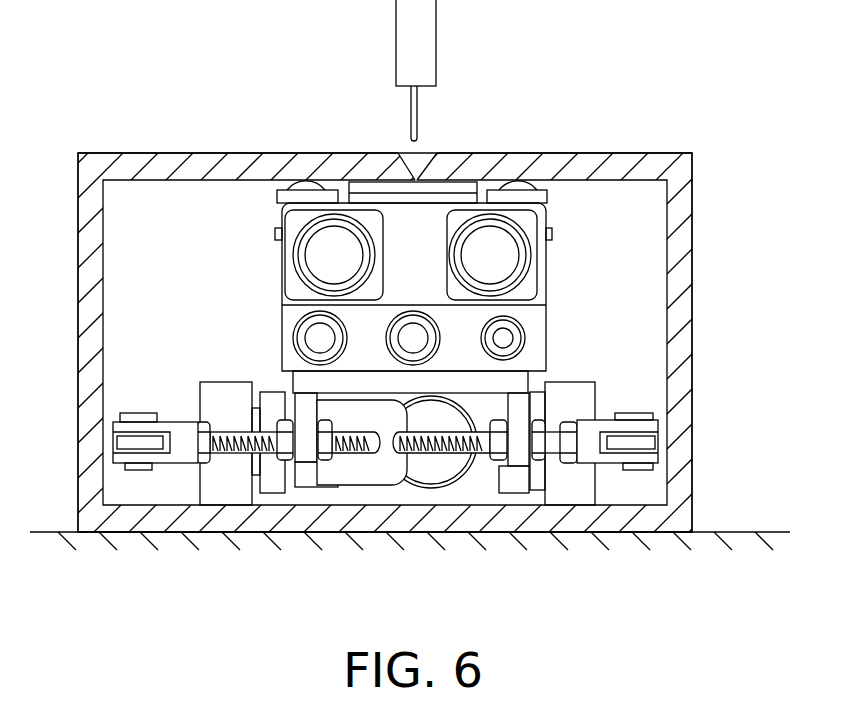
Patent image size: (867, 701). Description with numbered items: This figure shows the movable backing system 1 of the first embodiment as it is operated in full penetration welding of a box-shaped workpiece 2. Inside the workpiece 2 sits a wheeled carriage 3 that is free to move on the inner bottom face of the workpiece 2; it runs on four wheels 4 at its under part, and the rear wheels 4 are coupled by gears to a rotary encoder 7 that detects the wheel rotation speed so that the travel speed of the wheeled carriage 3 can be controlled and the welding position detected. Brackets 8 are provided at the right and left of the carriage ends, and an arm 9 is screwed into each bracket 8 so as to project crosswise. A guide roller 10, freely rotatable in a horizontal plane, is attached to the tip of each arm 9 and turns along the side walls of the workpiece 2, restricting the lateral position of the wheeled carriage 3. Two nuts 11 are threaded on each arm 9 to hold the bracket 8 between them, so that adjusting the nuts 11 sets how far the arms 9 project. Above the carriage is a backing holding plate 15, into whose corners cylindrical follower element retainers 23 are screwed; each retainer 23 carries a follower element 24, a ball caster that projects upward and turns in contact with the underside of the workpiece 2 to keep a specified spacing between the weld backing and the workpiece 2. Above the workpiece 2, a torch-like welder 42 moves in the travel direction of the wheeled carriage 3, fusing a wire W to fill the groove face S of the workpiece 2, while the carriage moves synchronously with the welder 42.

The movable backing system 1 is at (706, 246).
The workpiece 2 is at (655, 163).
The wheeled carriage 3 is at (540, 387).
The wheel 4 is at (215, 497).
The rotary encoder 7 is at (393, 478).
The bracket 8 is at (307, 460).
The arm 9 is at (362, 452).
The guide roller 10 is at (120, 441).
The nut 11 is at (281, 468).
The backing holding plate 15 is at (517, 182).
The follower element retainer 23 is at (277, 195).
The follower element 24 is at (300, 181).
The welder 42 is at (437, 18).
The groove face S is at (409, 176).
The wire W is at (418, 110).